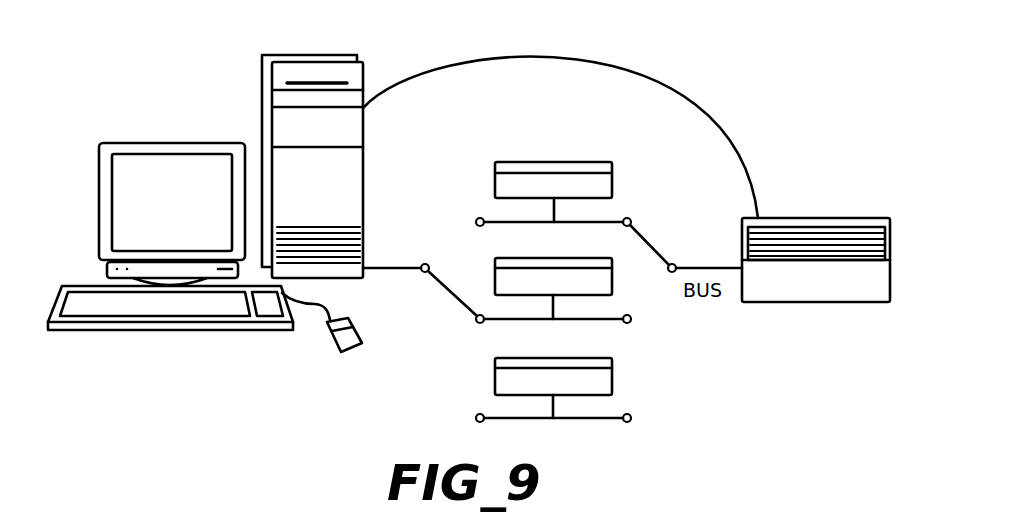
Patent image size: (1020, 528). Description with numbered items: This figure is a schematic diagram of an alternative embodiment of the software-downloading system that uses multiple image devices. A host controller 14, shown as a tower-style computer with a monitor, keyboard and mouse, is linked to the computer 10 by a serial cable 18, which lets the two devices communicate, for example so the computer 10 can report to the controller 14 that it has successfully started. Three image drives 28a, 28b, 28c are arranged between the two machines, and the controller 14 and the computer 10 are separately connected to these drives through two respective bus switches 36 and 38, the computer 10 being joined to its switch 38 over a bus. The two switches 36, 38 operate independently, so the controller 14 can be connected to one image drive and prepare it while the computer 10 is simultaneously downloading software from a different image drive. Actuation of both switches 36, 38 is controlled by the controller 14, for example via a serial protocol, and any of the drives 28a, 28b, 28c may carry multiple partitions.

The computer 10 is at (837, 302).
The host controller 14 is at (273, 118).
The serial cable 18 is at (717, 118).
The image drive 28a is at (557, 162).
The image drive 28b is at (490, 265).
The image drive 28c is at (612, 378).
The bus switch 36 is at (452, 297).
The bus switch 38 is at (653, 240).